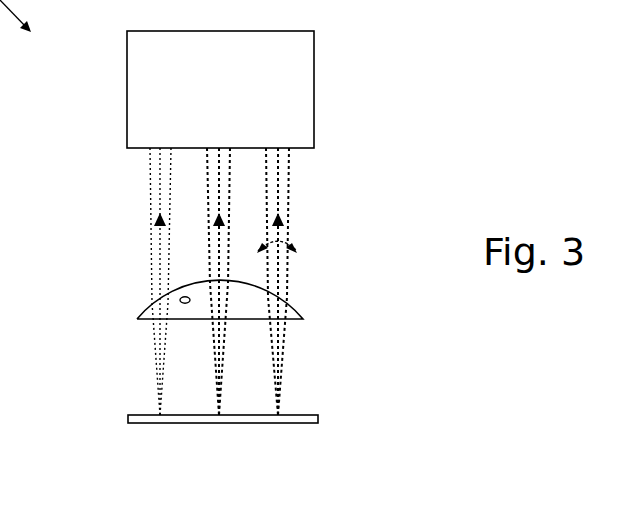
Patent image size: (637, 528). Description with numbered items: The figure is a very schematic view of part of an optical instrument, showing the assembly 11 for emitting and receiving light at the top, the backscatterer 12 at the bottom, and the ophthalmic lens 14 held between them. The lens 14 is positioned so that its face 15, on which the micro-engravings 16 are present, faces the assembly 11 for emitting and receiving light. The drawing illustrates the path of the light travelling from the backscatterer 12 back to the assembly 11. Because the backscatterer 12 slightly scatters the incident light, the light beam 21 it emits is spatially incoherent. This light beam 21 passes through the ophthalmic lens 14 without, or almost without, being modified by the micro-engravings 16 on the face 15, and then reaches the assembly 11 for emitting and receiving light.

The assembly for emitting and receiving light 11 is at (208, 104).
The backscatterer 12 is at (250, 418).
The ophthalmic lens 14 is at (292, 316).
The face 15 is at (256, 278).
The micro-engravings 16 is at (180, 299).
The light beam 21 is at (172, 373).